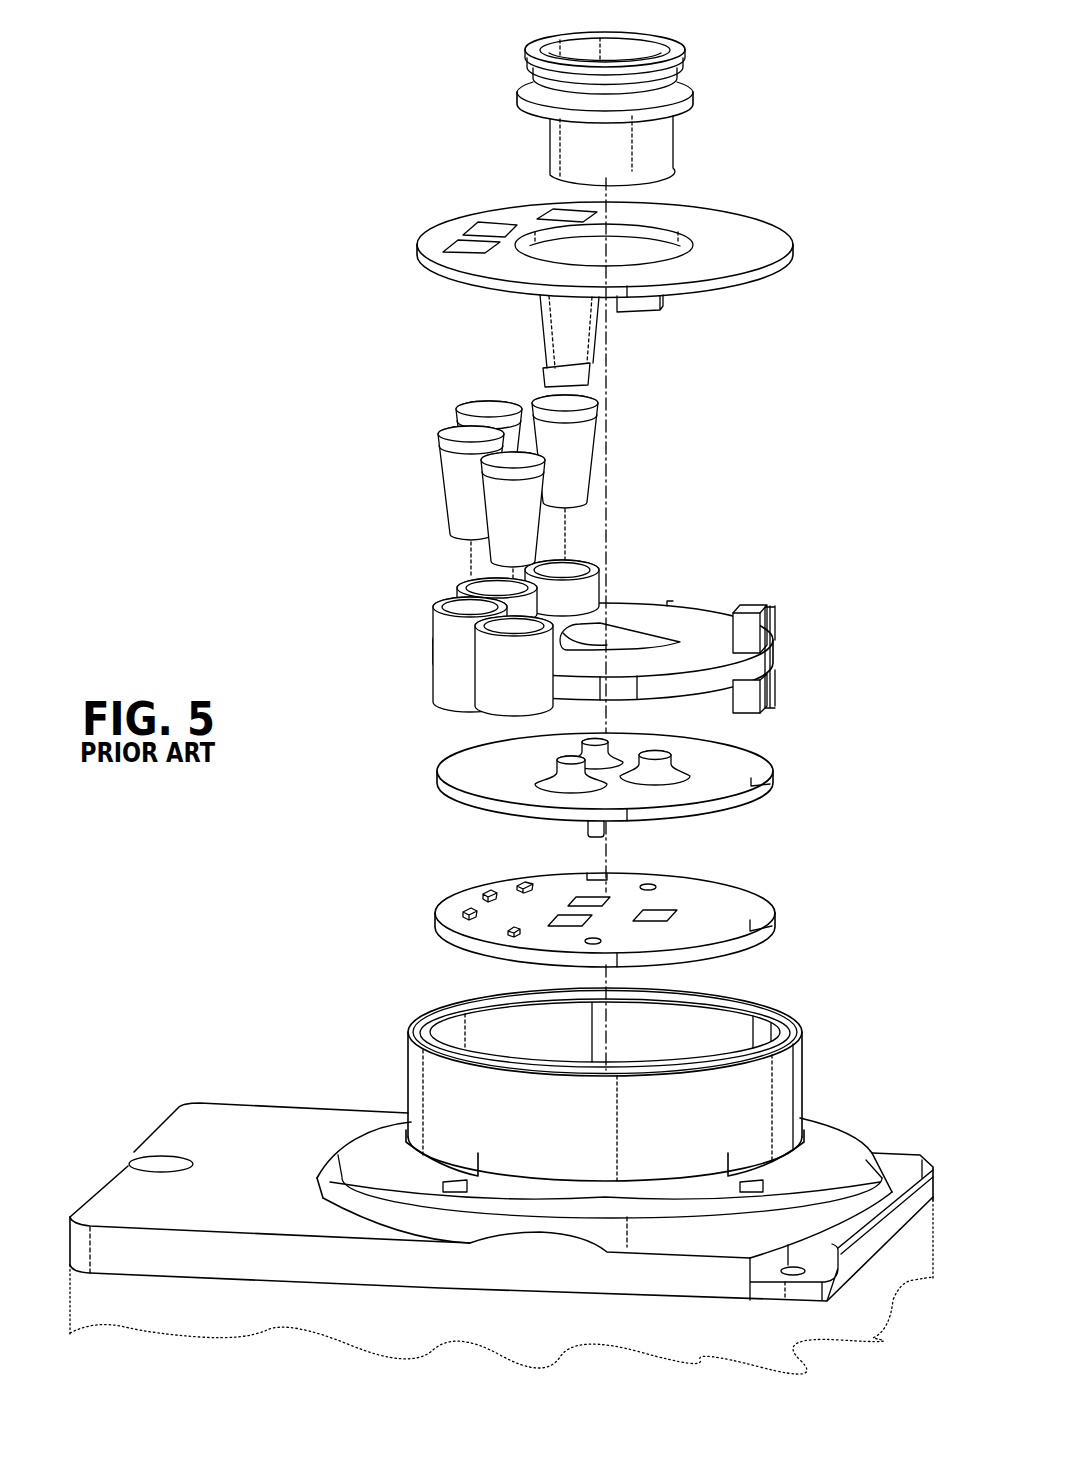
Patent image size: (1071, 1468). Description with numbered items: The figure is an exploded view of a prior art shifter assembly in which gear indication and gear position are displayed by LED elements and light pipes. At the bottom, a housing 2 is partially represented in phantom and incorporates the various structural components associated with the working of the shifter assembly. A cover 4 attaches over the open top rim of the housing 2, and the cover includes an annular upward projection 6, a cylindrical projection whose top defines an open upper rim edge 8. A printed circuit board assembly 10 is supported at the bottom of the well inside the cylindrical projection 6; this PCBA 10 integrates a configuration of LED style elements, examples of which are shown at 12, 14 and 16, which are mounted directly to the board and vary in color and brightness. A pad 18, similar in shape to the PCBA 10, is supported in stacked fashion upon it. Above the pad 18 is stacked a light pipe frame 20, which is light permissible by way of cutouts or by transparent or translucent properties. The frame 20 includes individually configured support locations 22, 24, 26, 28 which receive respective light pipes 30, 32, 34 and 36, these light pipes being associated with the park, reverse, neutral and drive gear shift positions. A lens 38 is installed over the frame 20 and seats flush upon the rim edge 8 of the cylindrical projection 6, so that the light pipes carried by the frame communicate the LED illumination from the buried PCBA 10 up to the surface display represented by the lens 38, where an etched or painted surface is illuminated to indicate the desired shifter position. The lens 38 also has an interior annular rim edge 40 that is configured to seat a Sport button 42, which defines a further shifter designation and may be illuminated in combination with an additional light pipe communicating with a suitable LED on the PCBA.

The housing 2 is at (70, 1297).
The cover 4 is at (290, 1118).
The annular upward projection 6 is at (410, 1072).
The open upper rim edge 8 is at (423, 1020).
The printed circuit board assembly 10 is at (463, 897).
The LED style element 12 is at (510, 931).
The LED style element 14 is at (466, 912).
The LED style element 16 is at (485, 892).
The pad 18 is at (465, 770).
The light pipe frame 20 is at (693, 617).
The support location 22 is at (490, 650).
The support location 24 is at (445, 627).
The support location 26 is at (477, 583).
The support location 28 is at (575, 563).
The light pipe 30 is at (527, 497).
The light pipe 32 is at (452, 470).
The light pipe 34 is at (483, 408).
The light pipe 36 is at (590, 413).
The lens 38 is at (440, 236).
The interior annular rim edge 40 is at (650, 238).
The Sport button 42 is at (565, 144).